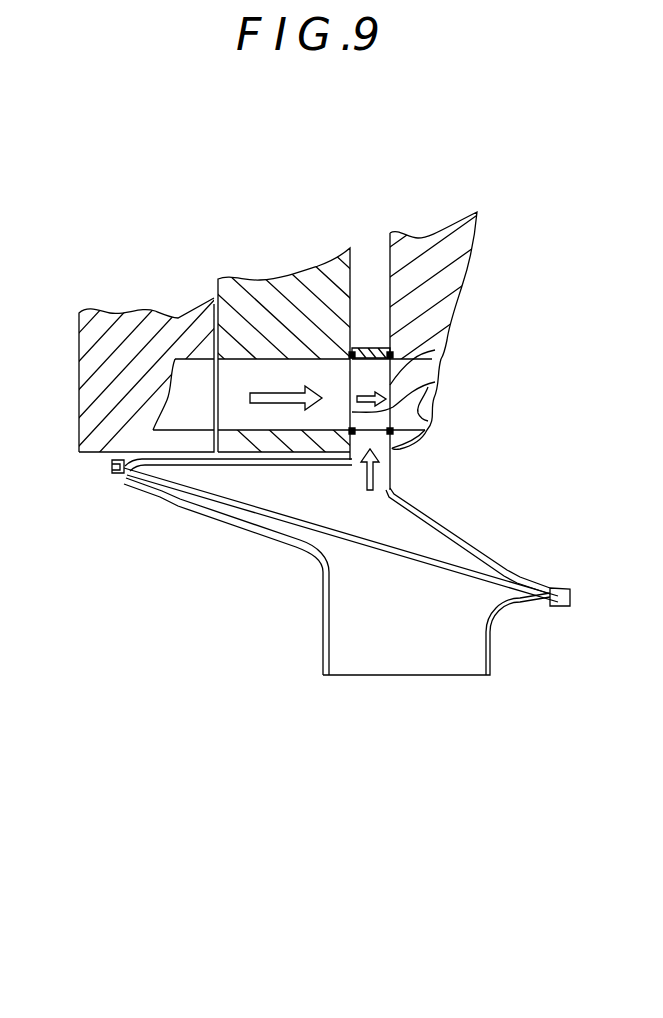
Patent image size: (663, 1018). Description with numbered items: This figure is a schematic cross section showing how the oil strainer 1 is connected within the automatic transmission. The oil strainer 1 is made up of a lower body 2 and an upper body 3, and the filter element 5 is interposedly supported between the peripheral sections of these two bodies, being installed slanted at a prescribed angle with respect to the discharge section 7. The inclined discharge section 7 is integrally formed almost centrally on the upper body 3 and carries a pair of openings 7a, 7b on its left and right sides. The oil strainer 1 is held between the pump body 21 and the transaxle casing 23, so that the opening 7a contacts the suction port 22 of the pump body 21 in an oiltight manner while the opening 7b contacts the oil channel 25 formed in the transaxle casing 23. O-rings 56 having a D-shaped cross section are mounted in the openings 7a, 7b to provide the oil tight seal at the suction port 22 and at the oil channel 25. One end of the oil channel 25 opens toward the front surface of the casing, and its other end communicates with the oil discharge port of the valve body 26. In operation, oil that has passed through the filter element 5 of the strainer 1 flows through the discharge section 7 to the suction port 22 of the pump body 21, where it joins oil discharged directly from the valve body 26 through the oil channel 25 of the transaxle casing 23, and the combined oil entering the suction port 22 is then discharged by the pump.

The oil strainer 1 is at (261, 534).
The lower body 2 is at (293, 547).
The upper body 3 is at (446, 527).
The filter element 5 is at (447, 560).
The discharge section 7 is at (504, 343).
The opening 7a is at (435, 350).
The opening 7b is at (435, 382).
The pump body 21 is at (433, 262).
The suction port 22 is at (415, 410).
The transaxle casing 23 is at (272, 283).
The oil channel 25 is at (247, 422).
The valve body 26 is at (82, 373).
The O-ring 56 is at (368, 350).